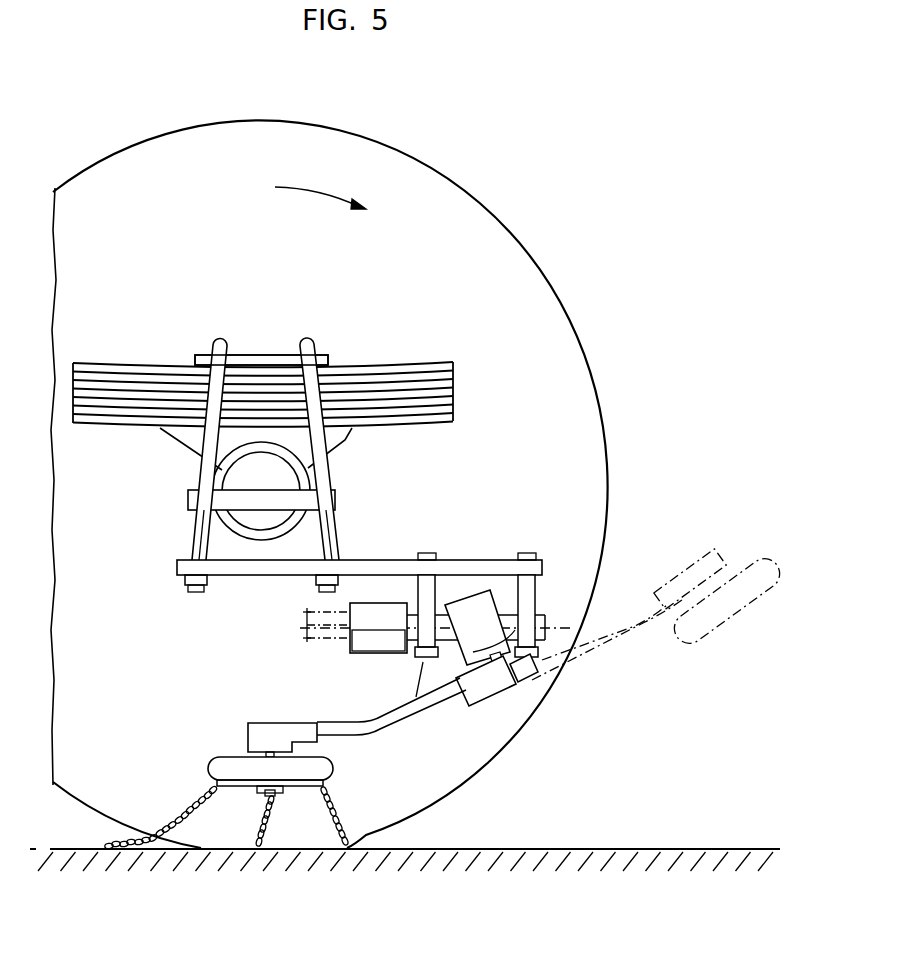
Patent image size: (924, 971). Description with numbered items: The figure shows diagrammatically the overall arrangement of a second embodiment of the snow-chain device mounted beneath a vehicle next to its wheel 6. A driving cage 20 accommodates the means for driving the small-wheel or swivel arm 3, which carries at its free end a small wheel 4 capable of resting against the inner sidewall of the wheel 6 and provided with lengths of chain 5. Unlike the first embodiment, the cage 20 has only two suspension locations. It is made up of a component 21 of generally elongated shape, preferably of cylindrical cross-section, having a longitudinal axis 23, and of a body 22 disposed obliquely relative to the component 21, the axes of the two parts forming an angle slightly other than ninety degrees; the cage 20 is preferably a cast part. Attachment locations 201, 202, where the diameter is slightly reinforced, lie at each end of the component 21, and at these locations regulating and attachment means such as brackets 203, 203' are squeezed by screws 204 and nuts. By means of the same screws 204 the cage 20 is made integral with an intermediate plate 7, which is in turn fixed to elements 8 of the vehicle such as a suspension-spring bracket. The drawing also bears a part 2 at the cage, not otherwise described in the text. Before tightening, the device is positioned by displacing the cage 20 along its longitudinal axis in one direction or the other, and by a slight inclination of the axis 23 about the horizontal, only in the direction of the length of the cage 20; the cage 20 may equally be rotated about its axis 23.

The wheel 6 is at (570, 355).
The suspension-spring bracket 8 is at (197, 542).
The intermediate plate 7 is at (380, 557).
The longitudinal axis 23 is at (298, 630).
The driving cage 20 is at (548, 610).
The sensor body 2 is at (350, 650).
The attachment location 201 is at (386, 656).
The elongated component 21 is at (508, 600).
The body 22 is at (473, 600).
The bracket 203 is at (484, 700).
The attachment location 202 is at (540, 672).
The bracket 203' is at (659, 614).
The screws 204 is at (418, 705).
The swivel arm 3 is at (356, 742).
The small wheel 4 is at (222, 757).
The lengths of chain 5 is at (187, 815).